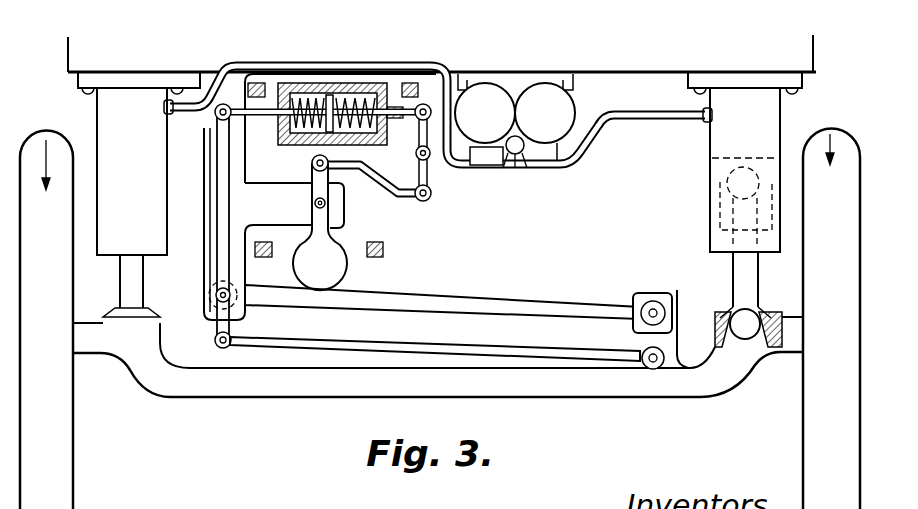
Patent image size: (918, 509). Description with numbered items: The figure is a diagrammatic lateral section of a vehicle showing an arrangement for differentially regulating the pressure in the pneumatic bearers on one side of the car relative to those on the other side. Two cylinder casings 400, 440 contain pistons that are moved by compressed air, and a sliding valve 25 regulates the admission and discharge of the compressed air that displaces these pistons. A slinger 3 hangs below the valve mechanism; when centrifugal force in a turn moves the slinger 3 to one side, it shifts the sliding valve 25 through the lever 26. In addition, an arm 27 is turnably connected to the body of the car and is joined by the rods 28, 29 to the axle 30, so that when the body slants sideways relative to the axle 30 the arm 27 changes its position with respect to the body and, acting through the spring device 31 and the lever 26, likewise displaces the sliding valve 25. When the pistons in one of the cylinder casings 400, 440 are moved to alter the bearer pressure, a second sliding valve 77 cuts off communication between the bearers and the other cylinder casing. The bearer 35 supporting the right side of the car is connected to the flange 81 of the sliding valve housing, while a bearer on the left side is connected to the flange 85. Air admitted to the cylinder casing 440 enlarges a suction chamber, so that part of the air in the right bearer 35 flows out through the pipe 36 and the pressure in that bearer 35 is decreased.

The slinger 3 is at (345, 268).
The sliding valve 25 is at (416, 155).
The lever 26 is at (431, 184).
The arm 27 is at (220, 163).
The rod 28 is at (487, 307).
The rod 29 is at (510, 352).
The axle 30 is at (253, 387).
The spring device 31 is at (323, 85).
The bearer 35 is at (132, 171).
The pipe 36 is at (428, 62).
The sliding valve 77 is at (486, 156).
The flange 81 is at (518, 162).
The flange 85 is at (527, 168).
The cylinder casing 400 is at (485, 113).
The cylinder casing 440 is at (545, 113).